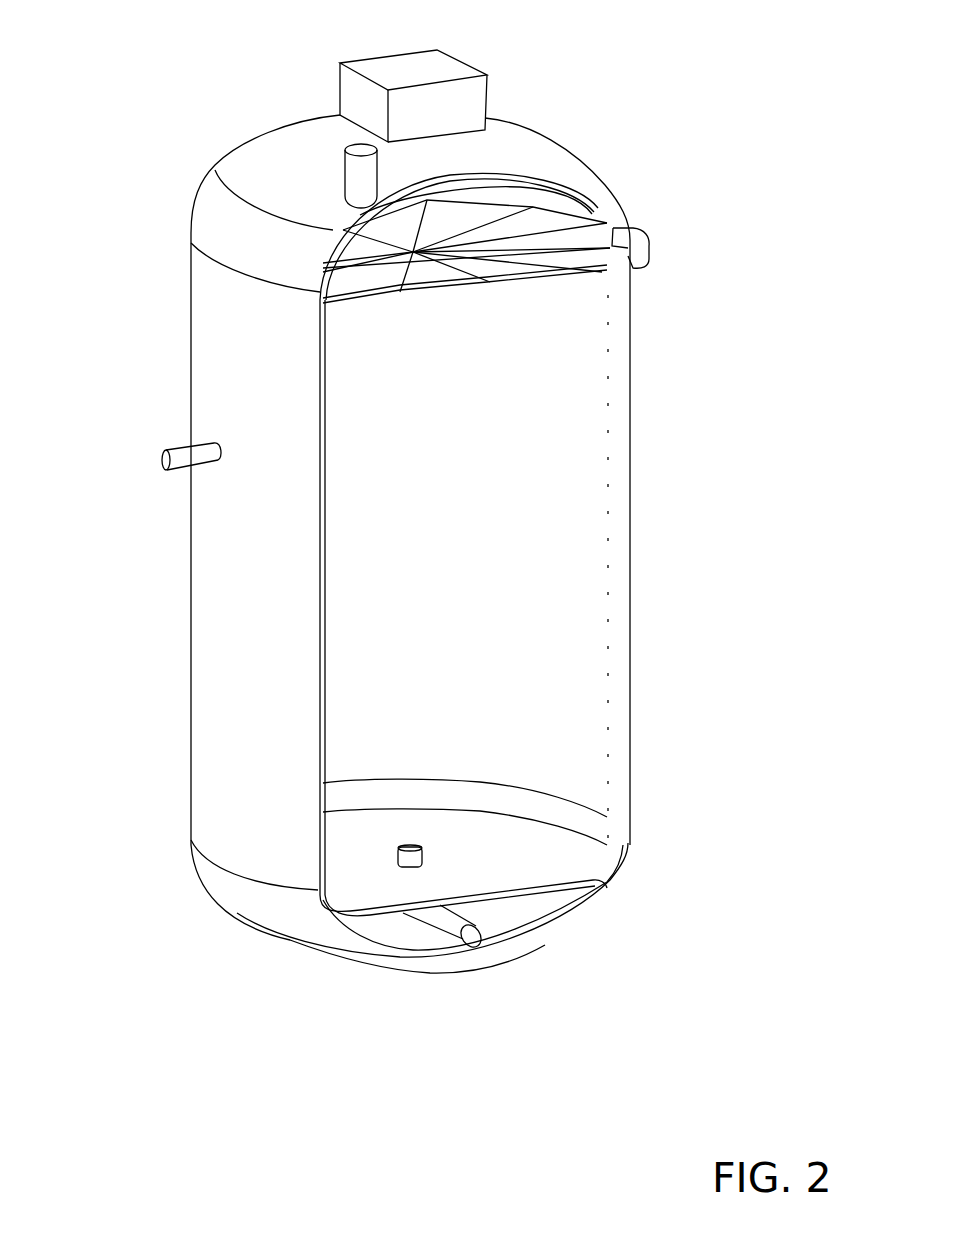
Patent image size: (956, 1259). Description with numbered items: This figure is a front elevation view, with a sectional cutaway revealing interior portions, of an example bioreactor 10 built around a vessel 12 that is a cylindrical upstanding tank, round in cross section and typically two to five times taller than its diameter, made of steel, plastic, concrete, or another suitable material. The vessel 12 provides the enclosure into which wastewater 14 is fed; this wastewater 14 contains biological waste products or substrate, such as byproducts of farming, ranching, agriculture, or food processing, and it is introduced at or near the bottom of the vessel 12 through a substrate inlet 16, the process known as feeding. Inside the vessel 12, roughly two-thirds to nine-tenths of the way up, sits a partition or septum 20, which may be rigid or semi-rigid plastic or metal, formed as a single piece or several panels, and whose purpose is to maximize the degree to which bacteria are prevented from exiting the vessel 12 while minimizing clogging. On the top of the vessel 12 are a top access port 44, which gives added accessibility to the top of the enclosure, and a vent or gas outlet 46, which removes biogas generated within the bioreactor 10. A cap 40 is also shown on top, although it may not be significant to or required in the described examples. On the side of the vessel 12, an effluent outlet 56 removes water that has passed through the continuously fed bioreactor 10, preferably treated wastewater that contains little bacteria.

The bioreactor 10 is at (553, 167).
The vessel 12 is at (267, 315).
The wastewater 14 is at (470, 558).
The substrate inlet 16 is at (477, 933).
The septum 20 is at (500, 283).
The cap 40 is at (413, 77).
The top access port 44 is at (363, 170).
The gas outlet 46 is at (636, 240).
The effluent outlet 56 is at (172, 455).